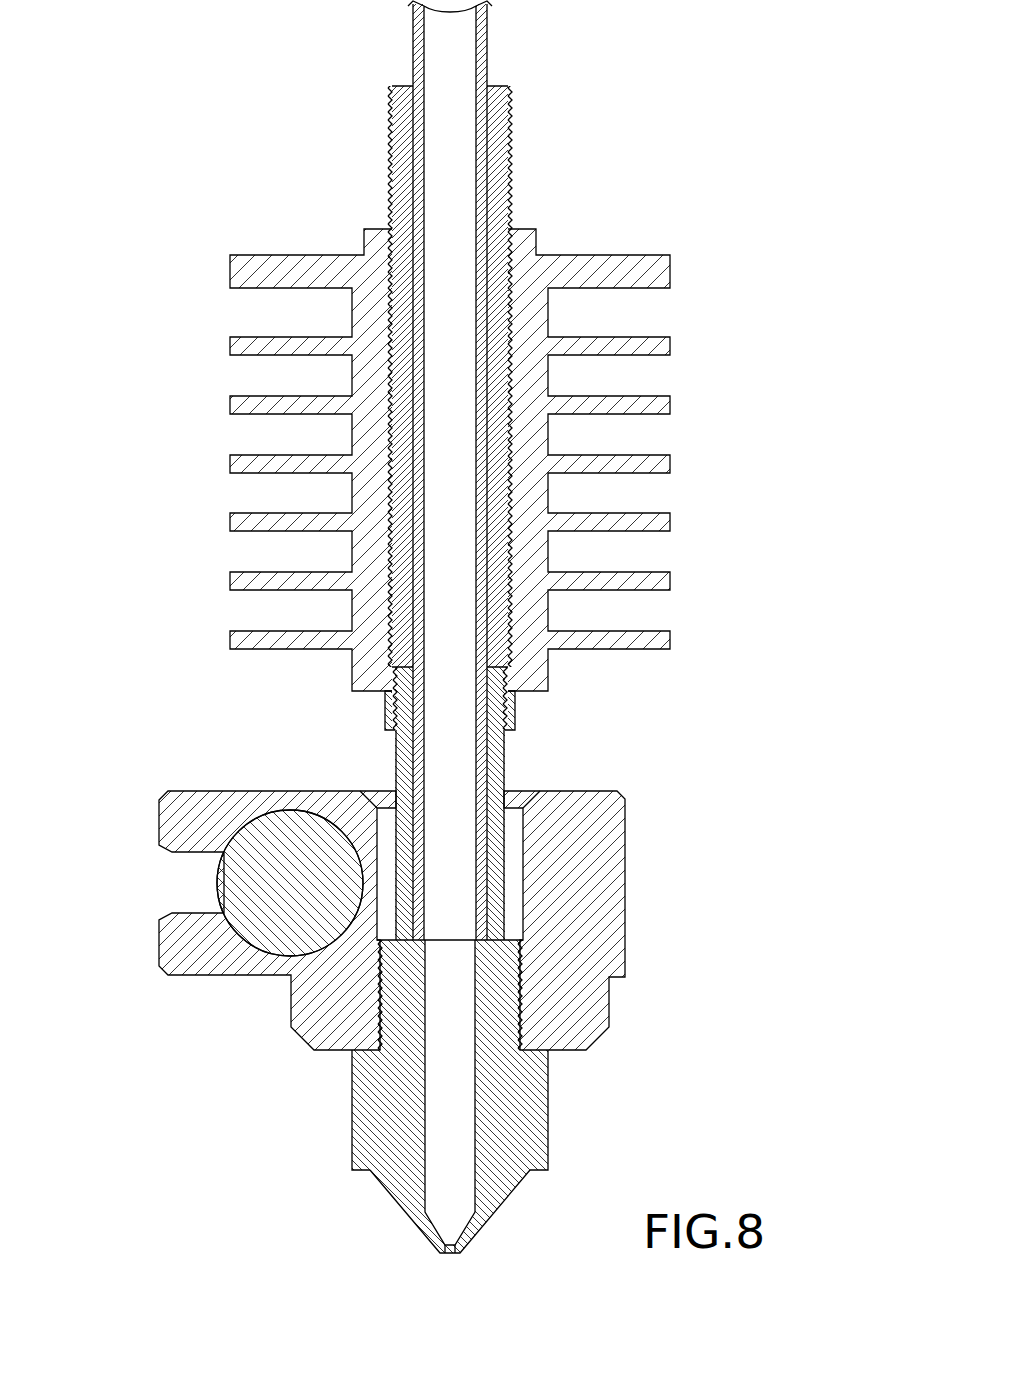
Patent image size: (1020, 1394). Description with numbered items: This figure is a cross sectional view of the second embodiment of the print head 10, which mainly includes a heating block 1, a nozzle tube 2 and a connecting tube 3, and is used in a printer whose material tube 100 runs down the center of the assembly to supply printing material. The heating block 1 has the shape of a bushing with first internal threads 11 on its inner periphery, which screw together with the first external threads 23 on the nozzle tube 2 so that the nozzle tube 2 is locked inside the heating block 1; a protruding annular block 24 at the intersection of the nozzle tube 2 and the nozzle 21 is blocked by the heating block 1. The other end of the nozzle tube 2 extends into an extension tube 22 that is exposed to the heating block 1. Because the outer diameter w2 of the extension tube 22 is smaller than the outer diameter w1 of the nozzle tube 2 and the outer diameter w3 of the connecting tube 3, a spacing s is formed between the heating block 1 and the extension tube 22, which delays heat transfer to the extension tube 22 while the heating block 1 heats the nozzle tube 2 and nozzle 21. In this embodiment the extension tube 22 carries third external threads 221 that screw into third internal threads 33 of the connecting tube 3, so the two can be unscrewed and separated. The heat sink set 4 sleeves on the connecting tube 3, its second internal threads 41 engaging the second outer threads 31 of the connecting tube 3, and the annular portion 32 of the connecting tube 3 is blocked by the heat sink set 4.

The material tube 100 is at (425, 23).
The print head 10 is at (330, 203).
The heating block 1 is at (192, 782).
The heat sink set 4 is at (540, 320).
The connecting tube 3 is at (444, 392).
The second outer threads 31 is at (367, 376).
The second internal threads 41 is at (390, 277).
The third external threads 221 is at (344, 698).
The third internal threads 33 is at (393, 699).
The annular portion 32 is at (393, 719).
The extension tube 22 is at (432, 803).
The nozzle tube 2 is at (452, 960).
The first internal threads 11 is at (551, 1004).
The first external threads 23 is at (520, 1030).
The protruding annular block 24 is at (540, 1133).
The nozzle 21 is at (473, 1233).
The spacing s is at (385, 826).
The outer diameter of the nozzle tube w1 is at (380, 987).
The outer diameter of the extension tube w2 is at (396, 800).
The outer diameter of the connecting tube w3 is at (393, 536).